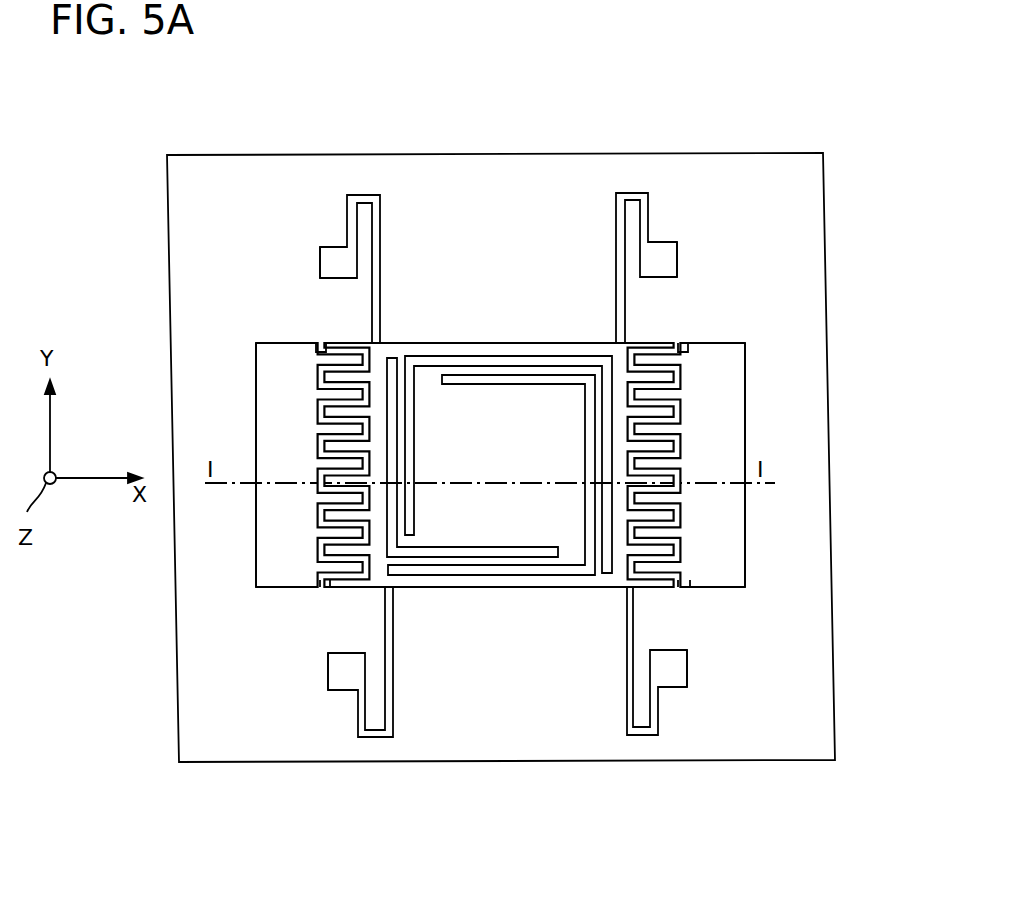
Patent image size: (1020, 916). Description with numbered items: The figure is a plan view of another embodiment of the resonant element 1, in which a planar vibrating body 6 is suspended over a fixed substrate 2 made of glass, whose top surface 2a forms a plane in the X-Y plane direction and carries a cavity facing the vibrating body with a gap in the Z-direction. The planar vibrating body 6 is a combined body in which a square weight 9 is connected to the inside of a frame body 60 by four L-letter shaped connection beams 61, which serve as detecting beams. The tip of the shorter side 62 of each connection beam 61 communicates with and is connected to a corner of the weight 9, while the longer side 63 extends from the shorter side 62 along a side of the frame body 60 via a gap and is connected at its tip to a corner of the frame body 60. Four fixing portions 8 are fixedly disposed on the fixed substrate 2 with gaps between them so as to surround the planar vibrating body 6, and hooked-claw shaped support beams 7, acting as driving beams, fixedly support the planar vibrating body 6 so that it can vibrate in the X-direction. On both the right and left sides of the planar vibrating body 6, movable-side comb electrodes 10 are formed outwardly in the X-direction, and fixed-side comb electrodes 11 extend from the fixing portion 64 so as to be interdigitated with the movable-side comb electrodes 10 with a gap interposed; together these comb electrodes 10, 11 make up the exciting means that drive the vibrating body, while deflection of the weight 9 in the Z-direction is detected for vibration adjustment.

The resonant element 1 is at (763, 105).
The fixed substrate 2 is at (826, 470).
The top surface 2a is at (830, 658).
The planar vibrating body 6 is at (497, 516).
The support beam 7 is at (383, 273).
The fixing portion 8 is at (338, 249).
The weight 9 is at (531, 532).
The movable-side comb electrode 10 is at (333, 343).
The fixed-side comb electrode 11 is at (322, 343).
The frame body 60 is at (510, 354).
The connection beam 61 is at (560, 370).
The shorter side 62 is at (425, 380).
The longer side 63 is at (404, 420).
The fixing portion 64 is at (283, 540).